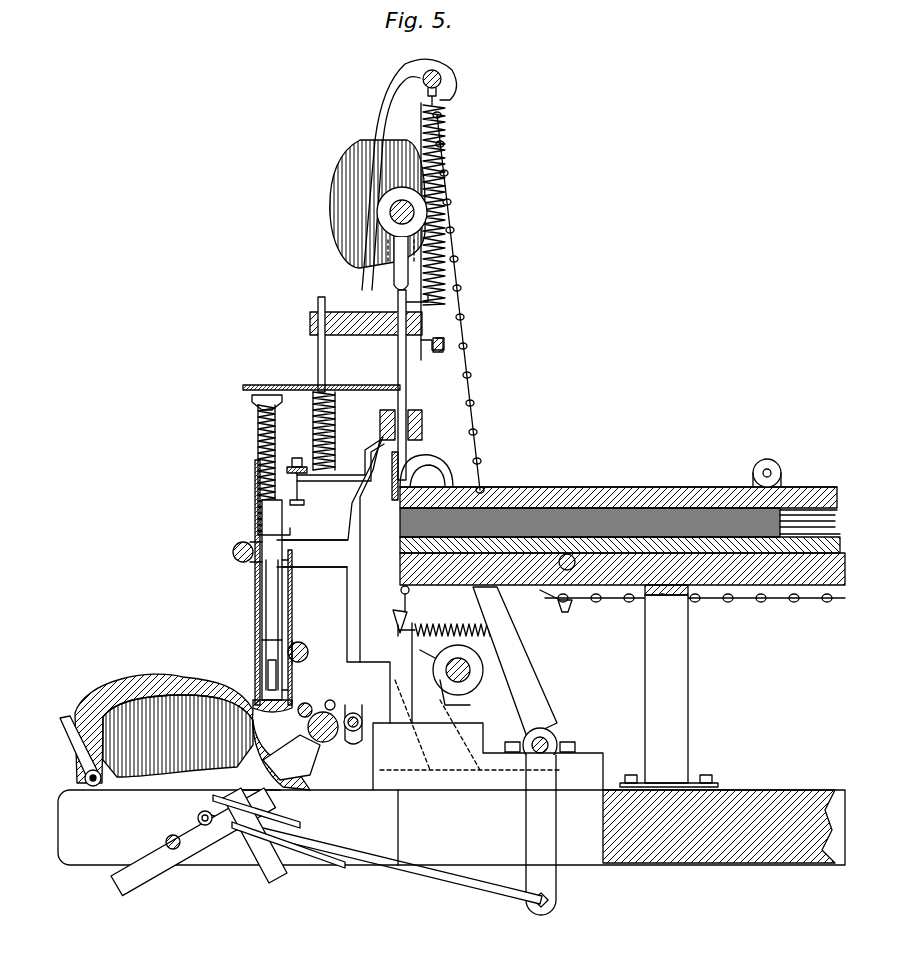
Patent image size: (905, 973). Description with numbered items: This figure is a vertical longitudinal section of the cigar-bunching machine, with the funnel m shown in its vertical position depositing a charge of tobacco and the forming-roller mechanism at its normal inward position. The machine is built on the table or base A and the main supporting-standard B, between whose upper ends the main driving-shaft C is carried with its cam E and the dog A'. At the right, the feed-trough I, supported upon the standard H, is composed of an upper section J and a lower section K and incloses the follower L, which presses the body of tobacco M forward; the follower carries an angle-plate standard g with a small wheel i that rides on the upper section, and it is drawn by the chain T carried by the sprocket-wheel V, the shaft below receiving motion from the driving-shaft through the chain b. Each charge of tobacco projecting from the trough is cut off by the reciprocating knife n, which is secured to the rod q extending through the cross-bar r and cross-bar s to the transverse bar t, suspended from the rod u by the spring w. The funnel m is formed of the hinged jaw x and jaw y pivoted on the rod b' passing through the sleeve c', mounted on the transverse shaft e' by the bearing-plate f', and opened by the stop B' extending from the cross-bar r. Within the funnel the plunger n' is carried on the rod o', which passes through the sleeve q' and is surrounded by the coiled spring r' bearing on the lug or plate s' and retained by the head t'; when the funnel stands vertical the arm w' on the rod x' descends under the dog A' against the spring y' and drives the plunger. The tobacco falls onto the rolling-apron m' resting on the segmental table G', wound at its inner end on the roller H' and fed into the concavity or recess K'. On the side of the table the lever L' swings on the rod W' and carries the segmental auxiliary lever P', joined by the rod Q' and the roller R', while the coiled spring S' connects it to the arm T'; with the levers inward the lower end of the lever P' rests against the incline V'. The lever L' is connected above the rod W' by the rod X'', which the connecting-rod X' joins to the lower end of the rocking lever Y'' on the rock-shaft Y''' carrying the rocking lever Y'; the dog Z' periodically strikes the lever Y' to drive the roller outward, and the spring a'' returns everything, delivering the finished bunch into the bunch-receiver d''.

The main supporting-standard B is at (367, 391).
The spring w is at (442, 205).
The cam E is at (366, 204).
The main driving-shaft C is at (402, 204).
The dog A' is at (391, 263).
The rod q is at (405, 294).
The cross-bar s is at (366, 343).
The rod x' is at (393, 385).
The transverse bar t is at (433, 355).
The chain b is at (458, 302).
The arm w' is at (321, 379).
The head t' is at (256, 402).
The coiled spring r' is at (257, 470).
The spring y' is at (331, 431).
The stop B' is at (335, 472).
The reciprocating knife n is at (409, 476).
The cross-bar r is at (407, 425).
The table top plate N is at (618, 488).
The feed-trough I is at (618, 477).
The body of tobacco M is at (590, 502).
The upper section of feed-trough J is at (776, 501).
The follower L is at (807, 493).
The lower section of feed-trough K is at (620, 543).
The table base plate O is at (622, 569).
The small wheel i is at (767, 464).
The angle-plate standard g is at (758, 466).
The chain T is at (695, 607).
The sprocket-wheel V is at (556, 610).
The standard H is at (669, 686).
The dog Z' is at (393, 609).
The spring a'' is at (453, 619).
The rod u is at (451, 675).
The rocking lever Y' is at (515, 662).
The rock-shaft Y''' is at (545, 743).
The rocking lever Y'' is at (541, 835).
The connecting-rod X' is at (373, 859).
The table or base A is at (451, 772).
The sleeve q' is at (264, 582).
The funnel m is at (260, 625).
The jaw x is at (262, 657).
The rod o' is at (257, 678).
The jaw y is at (291, 625).
The bearing-plate f' is at (236, 545).
The transverse shaft e' is at (238, 552).
The lug or plate s' is at (276, 526).
The flange E' is at (312, 545).
The sleeve c' is at (304, 644).
The rod b' is at (307, 653).
The plunger n' is at (277, 696).
The rolling-apron m' is at (192, 724).
The segmental table G' is at (159, 731).
The bunch-receiver d'' is at (67, 751).
The concavity or recess K' is at (289, 756).
The segmental auxiliary lever P' is at (316, 727).
The roller R' is at (310, 703).
The rod Q' is at (335, 696).
The roller H' is at (361, 717).
The pivot block F' is at (260, 799).
The lever L' is at (193, 842).
The rod W' is at (182, 851).
The rod X'' is at (192, 813).
The arm T' is at (255, 844).
The incline V' is at (264, 811).
The coiled spring S' is at (288, 843).